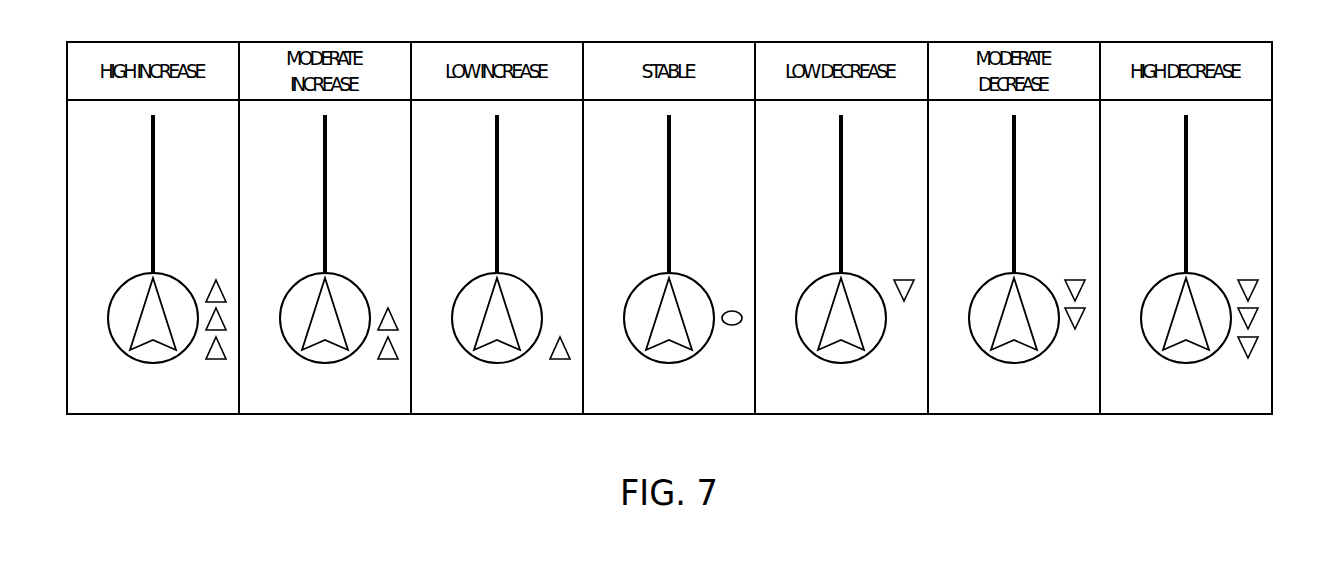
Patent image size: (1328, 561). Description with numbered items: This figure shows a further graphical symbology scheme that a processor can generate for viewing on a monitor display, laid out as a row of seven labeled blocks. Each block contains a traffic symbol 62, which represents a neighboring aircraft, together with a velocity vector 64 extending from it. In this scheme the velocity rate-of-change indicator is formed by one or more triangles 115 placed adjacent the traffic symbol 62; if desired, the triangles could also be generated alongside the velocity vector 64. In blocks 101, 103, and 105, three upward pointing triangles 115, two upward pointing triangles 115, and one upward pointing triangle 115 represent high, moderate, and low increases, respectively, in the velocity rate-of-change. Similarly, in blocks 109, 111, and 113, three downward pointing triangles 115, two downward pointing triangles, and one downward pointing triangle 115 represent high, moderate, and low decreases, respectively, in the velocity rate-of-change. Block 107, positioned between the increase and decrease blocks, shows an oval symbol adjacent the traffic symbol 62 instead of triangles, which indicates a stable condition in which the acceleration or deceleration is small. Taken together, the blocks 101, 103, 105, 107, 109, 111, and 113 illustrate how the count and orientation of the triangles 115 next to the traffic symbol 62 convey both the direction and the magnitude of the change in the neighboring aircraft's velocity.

The velocity vector 64 is at (640, 194).
The traffic symbol 62 is at (654, 318).
The triangles 115 is at (742, 320).
The block 101 is at (110, 406).
The block 103 is at (284, 406).
The block 105 is at (456, 406).
The block 107 is at (628, 406).
The block 109 is at (800, 406).
The block 111 is at (966, 406).
The block 113 is at (1145, 406).